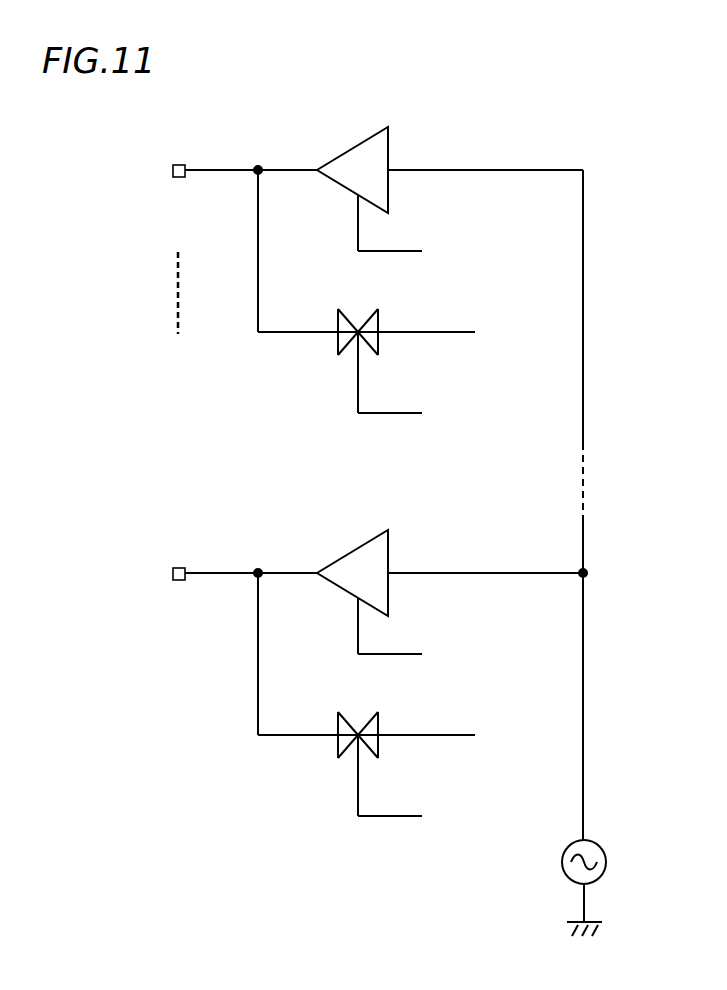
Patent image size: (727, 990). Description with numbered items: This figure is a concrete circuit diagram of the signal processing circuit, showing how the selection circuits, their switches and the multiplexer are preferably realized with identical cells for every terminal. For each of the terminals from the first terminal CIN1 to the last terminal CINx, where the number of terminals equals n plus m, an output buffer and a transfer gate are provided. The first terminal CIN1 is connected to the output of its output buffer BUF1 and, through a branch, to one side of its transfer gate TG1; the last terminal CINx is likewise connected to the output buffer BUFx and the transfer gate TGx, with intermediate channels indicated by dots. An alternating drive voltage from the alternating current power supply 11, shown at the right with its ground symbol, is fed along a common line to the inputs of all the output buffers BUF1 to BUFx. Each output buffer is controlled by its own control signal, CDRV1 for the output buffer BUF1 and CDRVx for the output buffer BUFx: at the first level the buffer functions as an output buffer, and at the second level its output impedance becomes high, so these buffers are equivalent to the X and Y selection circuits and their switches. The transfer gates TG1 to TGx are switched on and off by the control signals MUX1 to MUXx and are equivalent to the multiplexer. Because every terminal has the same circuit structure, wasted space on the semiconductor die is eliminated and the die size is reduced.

The alternating current power supply 11 is at (606, 869).
The terminal CIN1 is at (233, 157).
The output buffer BUF1 is at (349, 148).
The transfer gate TG1 is at (351, 309).
The control signal CDRV1 is at (428, 229).
The control signal MUX1 is at (422, 379).
The terminal CINx is at (233, 560).
The output buffer BUFx is at (349, 551).
The transfer gate TGx is at (351, 712).
The control signal CDRVx is at (428, 632).
The control signal MUXx is at (422, 782).